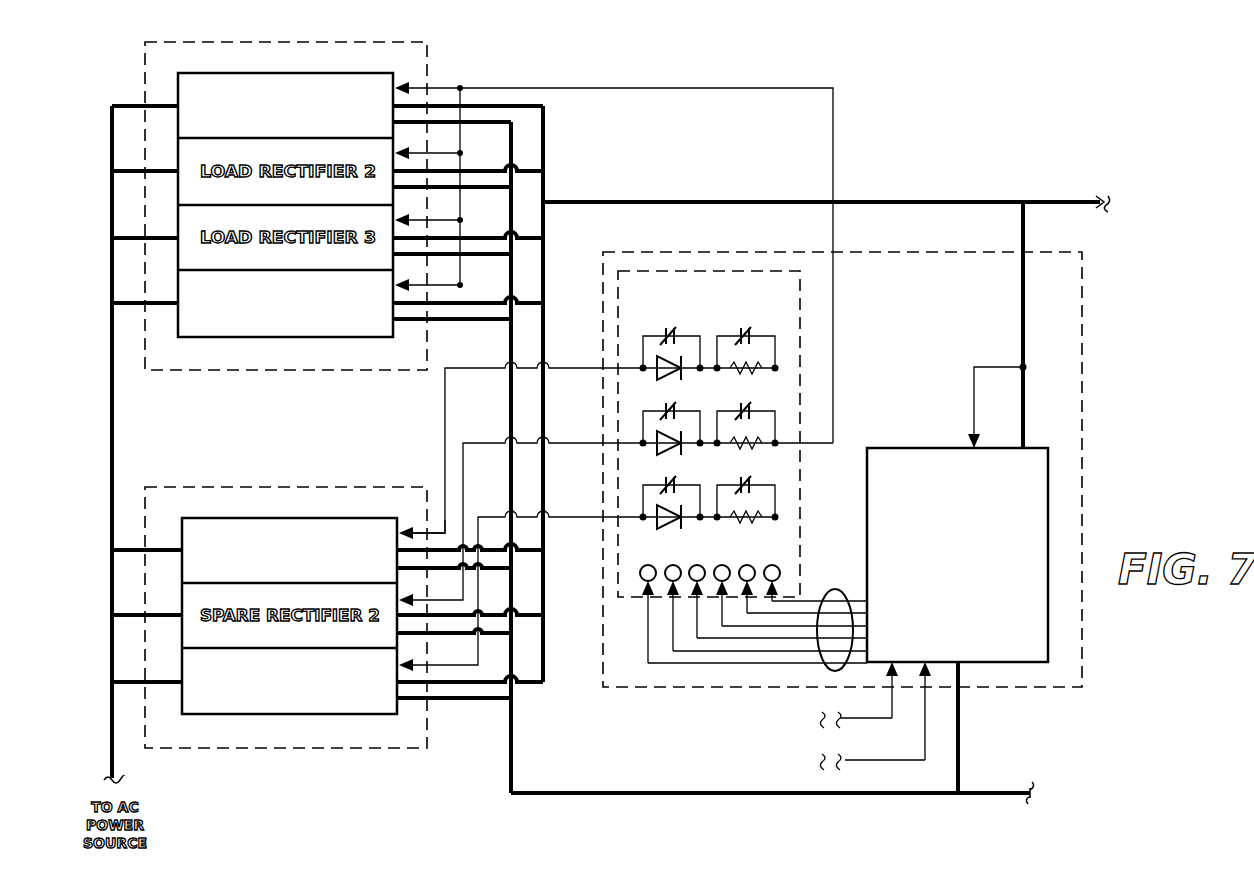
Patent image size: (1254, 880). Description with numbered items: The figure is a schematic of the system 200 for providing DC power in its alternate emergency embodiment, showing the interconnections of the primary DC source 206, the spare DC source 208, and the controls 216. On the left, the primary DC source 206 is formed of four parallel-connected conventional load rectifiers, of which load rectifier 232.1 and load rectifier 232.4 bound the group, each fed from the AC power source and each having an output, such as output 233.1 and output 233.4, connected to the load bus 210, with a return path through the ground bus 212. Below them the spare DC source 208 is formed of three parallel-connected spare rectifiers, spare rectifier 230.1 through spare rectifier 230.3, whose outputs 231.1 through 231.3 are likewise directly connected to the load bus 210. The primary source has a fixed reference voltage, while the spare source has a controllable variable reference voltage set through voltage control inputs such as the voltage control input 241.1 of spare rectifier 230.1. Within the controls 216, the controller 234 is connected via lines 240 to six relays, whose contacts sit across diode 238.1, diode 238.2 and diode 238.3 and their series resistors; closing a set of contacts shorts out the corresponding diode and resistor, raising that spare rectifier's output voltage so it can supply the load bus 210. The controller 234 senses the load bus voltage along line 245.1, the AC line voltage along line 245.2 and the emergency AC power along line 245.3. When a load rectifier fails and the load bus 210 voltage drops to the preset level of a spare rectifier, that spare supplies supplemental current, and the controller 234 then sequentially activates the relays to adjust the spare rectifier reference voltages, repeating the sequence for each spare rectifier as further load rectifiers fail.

The system 200 is at (762, 80).
The primary DC source 206 is at (144, 76).
The spare DC source 208 is at (282, 487).
The load bus 210 is at (625, 202).
The ground bus 212 is at (600, 795).
The controls 216 is at (1082, 420).
The spare rectifier 230.1 is at (274, 518).
The spare rectifier 230.3 is at (208, 714).
The output of spare rectifier 231.1 is at (398, 528).
The output of spare rectifier 231.3 is at (395, 682).
The load rectifier 232.1 is at (218, 73).
The load rectifier 232.4 is at (236, 337).
The output of load rectifier 233.1 is at (406, 98).
The output of load rectifier 233.4 is at (393, 303).
The controller 234 is at (936, 599).
The diode 238.1 is at (664, 370).
The diode 238.2 is at (664, 455).
The diode 238.3 is at (664, 529).
The lines 240 is at (832, 590).
The voltage control input 241.1 is at (445, 439).
The line 245.1 is at (974, 416).
The line 245.2 is at (845, 760).
The line 245.3 is at (845, 718).